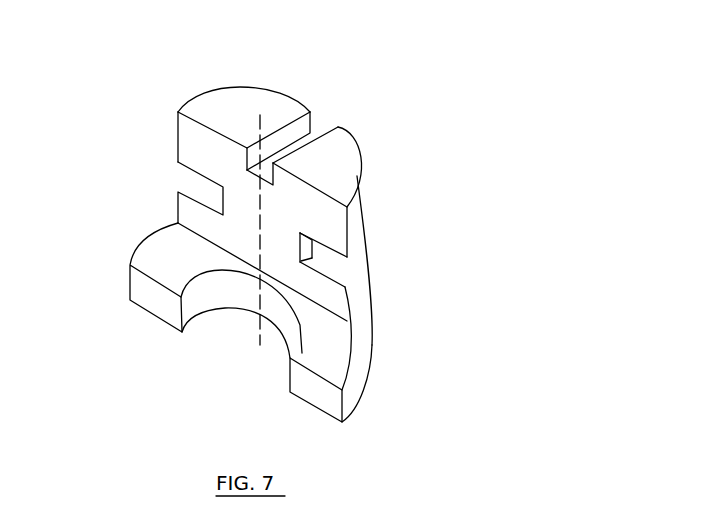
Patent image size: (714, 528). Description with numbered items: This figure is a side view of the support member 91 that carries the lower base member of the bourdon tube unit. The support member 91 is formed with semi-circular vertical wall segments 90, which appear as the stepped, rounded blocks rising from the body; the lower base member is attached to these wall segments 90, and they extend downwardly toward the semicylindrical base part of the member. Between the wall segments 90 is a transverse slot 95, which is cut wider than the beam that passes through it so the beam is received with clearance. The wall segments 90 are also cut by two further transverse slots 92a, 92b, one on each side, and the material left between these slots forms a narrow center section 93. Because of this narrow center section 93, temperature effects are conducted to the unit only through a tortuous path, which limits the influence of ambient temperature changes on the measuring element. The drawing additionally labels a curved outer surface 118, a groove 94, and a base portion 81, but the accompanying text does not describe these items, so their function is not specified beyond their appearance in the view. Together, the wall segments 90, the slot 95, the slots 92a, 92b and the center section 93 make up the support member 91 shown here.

The vertical wall segment 90 is at (233, 100).
The transverse slot 95 is at (287, 135).
The transverse slot 92b is at (202, 193).
The narrow center section 93 is at (247, 222).
The curved outer surface 118 is at (355, 228).
The groove 94 is at (328, 236).
The transverse slot 92a is at (330, 277).
The support member 91 is at (379, 350).
The base portion 81 is at (358, 392).